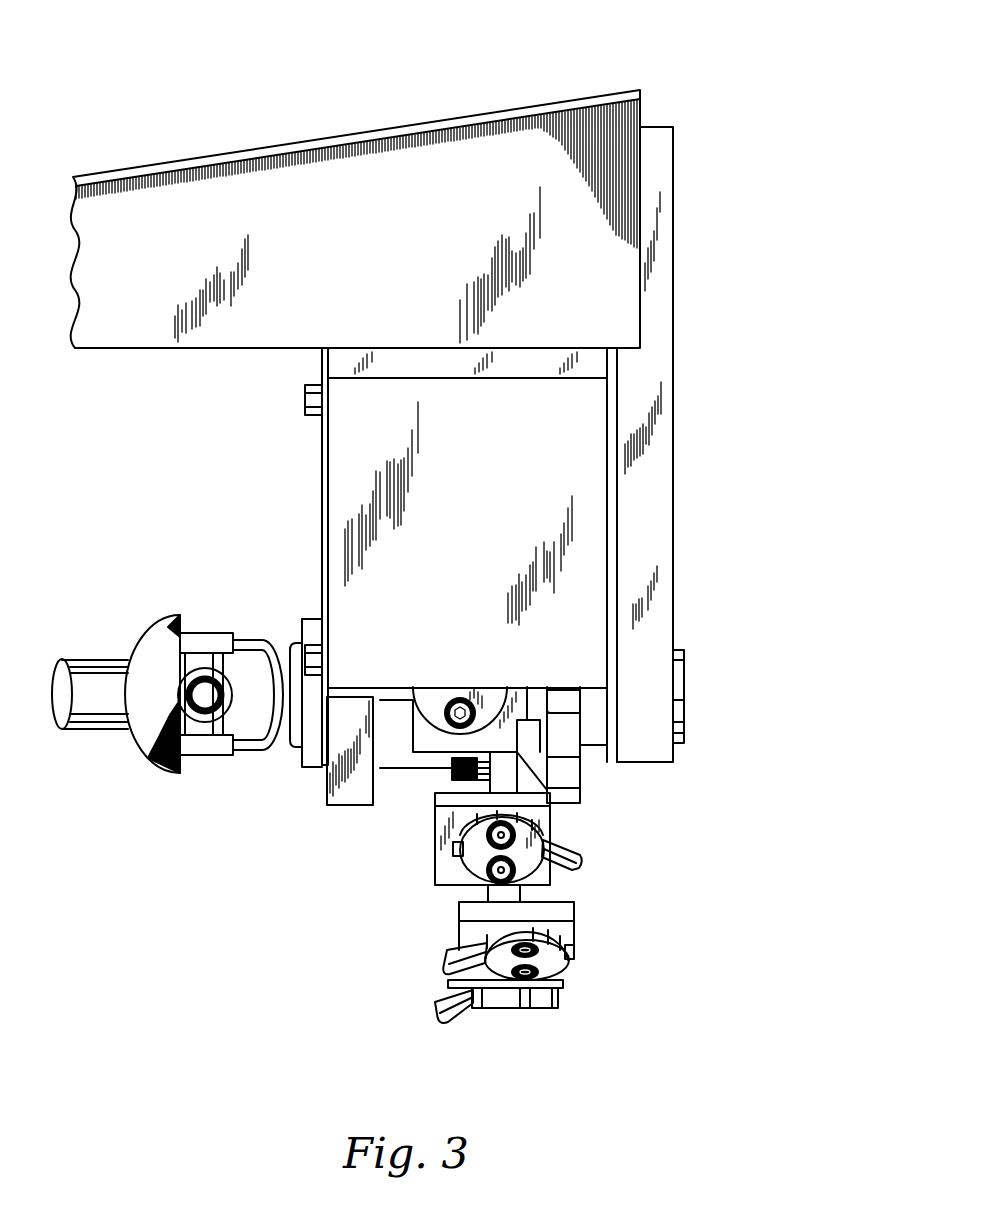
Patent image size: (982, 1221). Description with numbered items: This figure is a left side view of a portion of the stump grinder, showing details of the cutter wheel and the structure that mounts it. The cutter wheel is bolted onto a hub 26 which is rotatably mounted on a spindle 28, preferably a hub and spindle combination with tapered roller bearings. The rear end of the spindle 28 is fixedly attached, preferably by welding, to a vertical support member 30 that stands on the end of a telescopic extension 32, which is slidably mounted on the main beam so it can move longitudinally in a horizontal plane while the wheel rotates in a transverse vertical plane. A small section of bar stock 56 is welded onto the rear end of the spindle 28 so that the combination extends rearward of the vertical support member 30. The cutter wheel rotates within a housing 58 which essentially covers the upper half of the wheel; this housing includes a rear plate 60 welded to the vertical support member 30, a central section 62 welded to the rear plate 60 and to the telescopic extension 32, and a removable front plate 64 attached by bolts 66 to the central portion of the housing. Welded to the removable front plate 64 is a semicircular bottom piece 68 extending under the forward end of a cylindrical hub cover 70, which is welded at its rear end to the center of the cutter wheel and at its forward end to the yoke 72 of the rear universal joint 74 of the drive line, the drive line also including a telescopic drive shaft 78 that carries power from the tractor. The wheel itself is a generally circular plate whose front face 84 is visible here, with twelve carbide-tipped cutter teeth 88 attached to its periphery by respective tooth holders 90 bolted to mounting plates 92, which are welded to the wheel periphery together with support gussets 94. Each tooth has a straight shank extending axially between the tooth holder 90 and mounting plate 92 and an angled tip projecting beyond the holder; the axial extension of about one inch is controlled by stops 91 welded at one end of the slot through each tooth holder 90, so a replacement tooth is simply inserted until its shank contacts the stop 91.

The hub 26 is at (565, 800).
The spindle 28 is at (583, 747).
The vertical support member 30 is at (673, 505).
The telescopic extension 32 is at (333, 108).
The section of bar stock 56 is at (684, 720).
The housing 58 is at (627, 368).
The rear plate 60 is at (617, 483).
The central section 62 is at (343, 467).
The removable front plate 64 is at (316, 505).
The bolts 66 is at (305, 400).
The semicircular bottom piece 68 is at (340, 806).
The cylindrical hub cover 70 is at (308, 768).
The yoke 72 is at (258, 750).
The rear universal joint 74 is at (193, 757).
The telescopic drive shaft 78 is at (103, 657).
The front face 84 is at (480, 781).
The cutter teeth 88 is at (435, 1005).
The tooth holders 90 is at (565, 940).
The stops 91 is at (453, 848).
The mounting plates 92 is at (565, 917).
The support gussets 94 is at (548, 898).